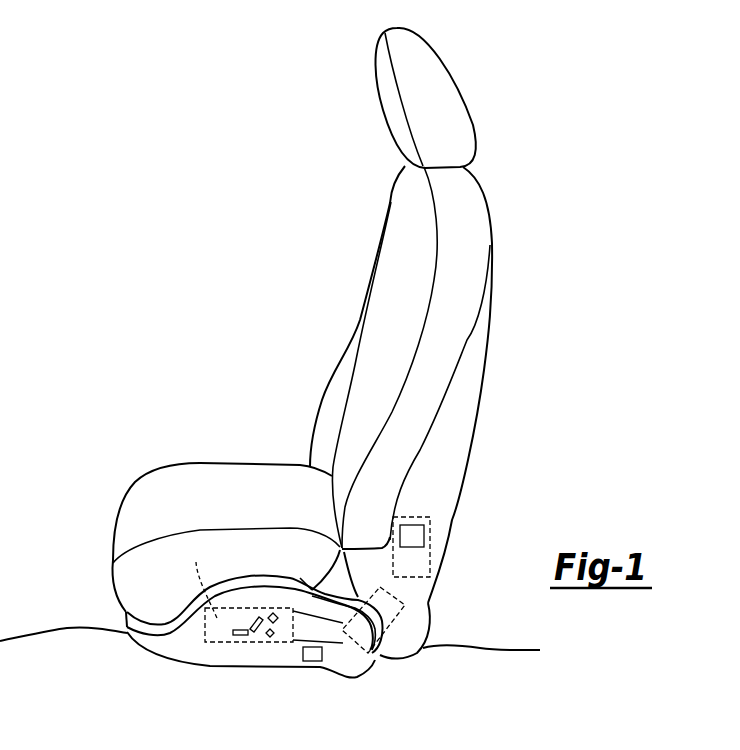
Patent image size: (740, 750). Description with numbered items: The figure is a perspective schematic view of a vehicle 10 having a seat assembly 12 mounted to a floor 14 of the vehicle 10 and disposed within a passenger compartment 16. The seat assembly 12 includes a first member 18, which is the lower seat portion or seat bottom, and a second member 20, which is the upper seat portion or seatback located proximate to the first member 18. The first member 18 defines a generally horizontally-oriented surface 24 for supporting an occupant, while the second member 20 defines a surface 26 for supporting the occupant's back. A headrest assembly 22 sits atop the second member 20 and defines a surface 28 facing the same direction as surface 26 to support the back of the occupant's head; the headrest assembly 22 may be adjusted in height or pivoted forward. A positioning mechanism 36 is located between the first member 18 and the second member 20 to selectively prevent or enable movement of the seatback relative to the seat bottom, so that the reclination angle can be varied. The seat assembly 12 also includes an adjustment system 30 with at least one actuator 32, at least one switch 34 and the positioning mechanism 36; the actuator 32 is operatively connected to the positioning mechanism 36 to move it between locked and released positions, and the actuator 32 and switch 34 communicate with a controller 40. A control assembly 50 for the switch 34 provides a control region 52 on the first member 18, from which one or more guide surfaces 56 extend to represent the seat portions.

The vehicle 10 is at (230, 169).
The seat assembly 12 is at (195, 283).
The floor 14 is at (70, 628).
The passenger compartment 16 is at (252, 332).
The first member 18 is at (226, 505).
The second member 20 is at (362, 384).
The headrest assembly 22 is at (392, 98).
The surface 24 is at (242, 507).
The surface 26 is at (407, 311).
The surface 28 is at (411, 116).
The adjustment system 30 is at (278, 634).
The actuator 32 is at (420, 572).
The switch 34 is at (274, 663).
The positioning mechanism 36 is at (372, 639).
The controller 40 is at (312, 661).
The control assembly 50 is at (265, 643).
The control region 52 is at (202, 578).
The guide surfaces 56 is at (242, 637).